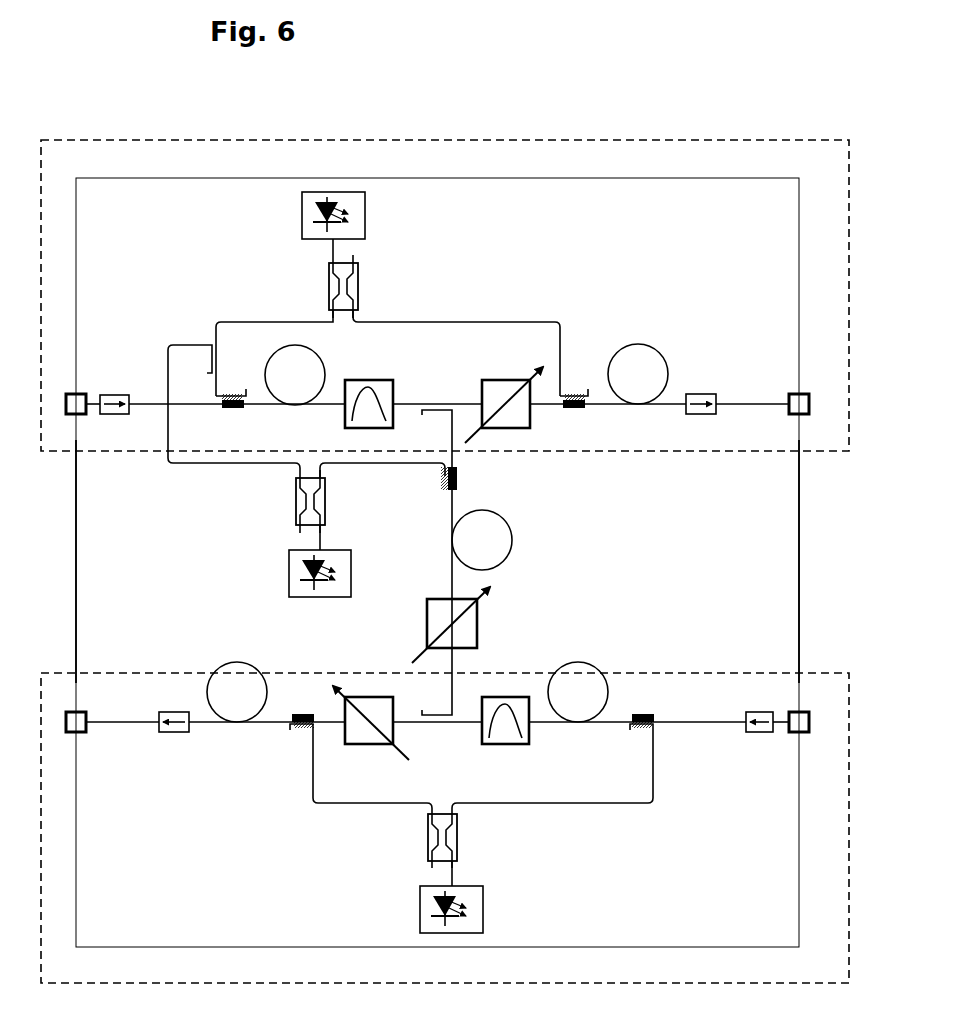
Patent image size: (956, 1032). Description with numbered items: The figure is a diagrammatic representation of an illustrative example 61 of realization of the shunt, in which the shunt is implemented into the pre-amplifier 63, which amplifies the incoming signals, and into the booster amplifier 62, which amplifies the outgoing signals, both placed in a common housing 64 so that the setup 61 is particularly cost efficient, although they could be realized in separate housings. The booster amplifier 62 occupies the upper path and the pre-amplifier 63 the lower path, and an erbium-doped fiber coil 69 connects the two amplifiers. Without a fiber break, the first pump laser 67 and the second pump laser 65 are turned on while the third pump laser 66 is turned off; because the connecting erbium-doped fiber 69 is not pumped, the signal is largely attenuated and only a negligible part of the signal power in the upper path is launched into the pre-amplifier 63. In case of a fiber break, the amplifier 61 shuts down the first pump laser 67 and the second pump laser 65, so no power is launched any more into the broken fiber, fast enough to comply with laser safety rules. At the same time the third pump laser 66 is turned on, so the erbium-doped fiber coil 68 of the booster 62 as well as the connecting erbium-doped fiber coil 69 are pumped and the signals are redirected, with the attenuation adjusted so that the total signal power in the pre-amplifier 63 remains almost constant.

The setup 61 is at (406, 88).
The booster amplifier 62 is at (620, 140).
The pre-amplifier 63 is at (730, 673).
The common housing 64 is at (799, 570).
The second pump laser 65 is at (302, 209).
The third pump laser 66 is at (289, 570).
The first pump laser 67 is at (420, 901).
The erbium-doped fiber coil 68 is at (322, 358).
The connecting erbium-doped fiber coil 69 is at (512, 538).